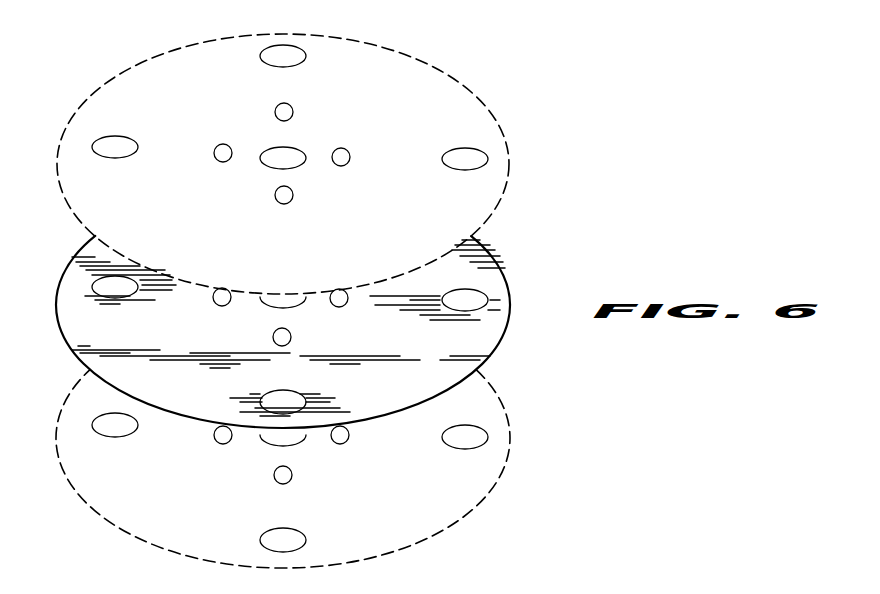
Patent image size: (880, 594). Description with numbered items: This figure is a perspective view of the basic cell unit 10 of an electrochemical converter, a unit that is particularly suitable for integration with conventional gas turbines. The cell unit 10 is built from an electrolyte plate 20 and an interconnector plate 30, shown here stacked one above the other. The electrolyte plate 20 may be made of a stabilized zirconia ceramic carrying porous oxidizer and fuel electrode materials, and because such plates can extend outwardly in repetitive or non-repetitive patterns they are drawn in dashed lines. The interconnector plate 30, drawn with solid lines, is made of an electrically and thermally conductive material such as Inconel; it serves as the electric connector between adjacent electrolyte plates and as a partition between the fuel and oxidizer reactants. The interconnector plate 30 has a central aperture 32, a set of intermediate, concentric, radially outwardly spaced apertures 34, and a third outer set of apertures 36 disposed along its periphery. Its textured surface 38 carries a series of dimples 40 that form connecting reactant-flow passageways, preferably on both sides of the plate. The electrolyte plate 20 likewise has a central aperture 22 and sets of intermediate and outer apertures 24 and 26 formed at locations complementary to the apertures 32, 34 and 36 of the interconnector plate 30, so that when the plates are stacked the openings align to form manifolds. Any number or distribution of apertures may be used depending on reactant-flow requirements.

The basic cell unit 10 is at (566, 80).
The electrolyte plate 20 is at (478, 101).
The central aperture 22 is at (283, 160).
The intermediate apertures 24 is at (215, 152).
The outer apertures 26 is at (282, 52).
The interconnector plate 30 is at (490, 251).
The central aperture 32 is at (270, 300).
The intermediate apertures 34 is at (292, 337).
The outer apertures 36 is at (86, 252).
The textured surface 38 is at (456, 342).
The dimples 40 is at (490, 327).